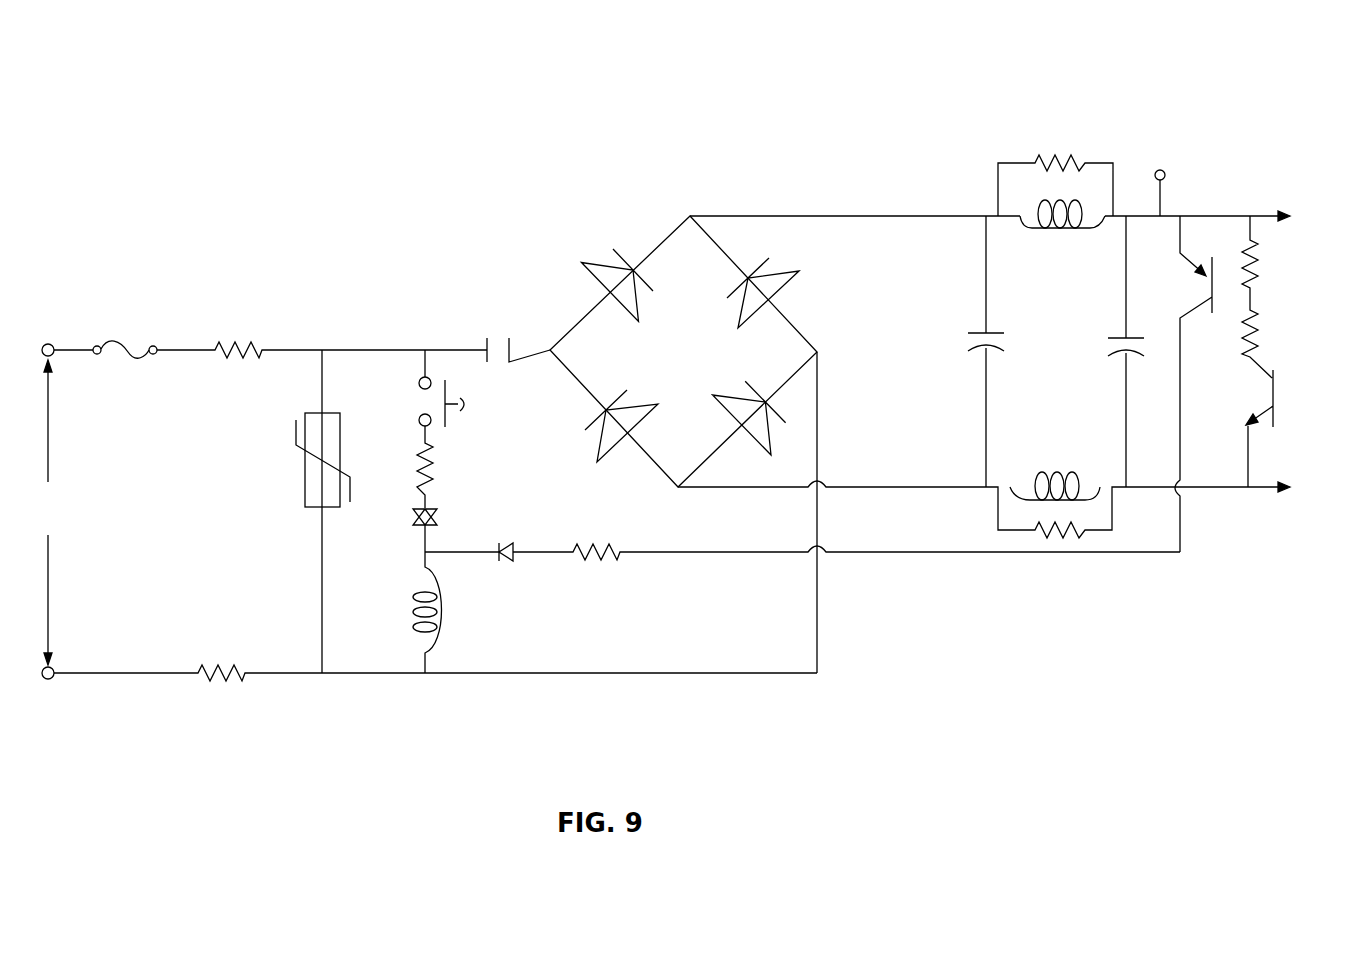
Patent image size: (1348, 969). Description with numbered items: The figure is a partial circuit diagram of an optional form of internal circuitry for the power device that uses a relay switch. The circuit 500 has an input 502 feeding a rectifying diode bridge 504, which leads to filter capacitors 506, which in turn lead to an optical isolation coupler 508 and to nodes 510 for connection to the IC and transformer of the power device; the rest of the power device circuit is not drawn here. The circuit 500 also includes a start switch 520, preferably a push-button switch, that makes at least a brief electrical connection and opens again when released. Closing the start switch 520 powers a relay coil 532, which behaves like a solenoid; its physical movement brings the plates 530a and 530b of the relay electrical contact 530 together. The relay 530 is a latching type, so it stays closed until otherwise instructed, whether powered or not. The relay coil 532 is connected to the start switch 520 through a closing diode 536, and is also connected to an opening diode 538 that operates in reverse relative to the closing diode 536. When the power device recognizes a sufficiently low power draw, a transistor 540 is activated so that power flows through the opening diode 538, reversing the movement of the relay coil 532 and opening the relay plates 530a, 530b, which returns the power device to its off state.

The circuit 500 is at (705, 140).
The input 502 is at (122, 500).
The rectifying diode bridge 504 is at (660, 204).
The filter capacitors 506 is at (1003, 467).
The optical isolation coupler 508 is at (1288, 415).
The nodes 510 is at (1280, 203).
The start switch 520 is at (408, 402).
The relay electrical contact 530 is at (493, 285).
The relay plate 530a is at (480, 336).
The relay plate 530b is at (516, 336).
The relay coil 532 is at (458, 644).
The closing diode 536 is at (398, 518).
The opening diode 538 is at (526, 576).
The transistor 540 is at (1192, 286).